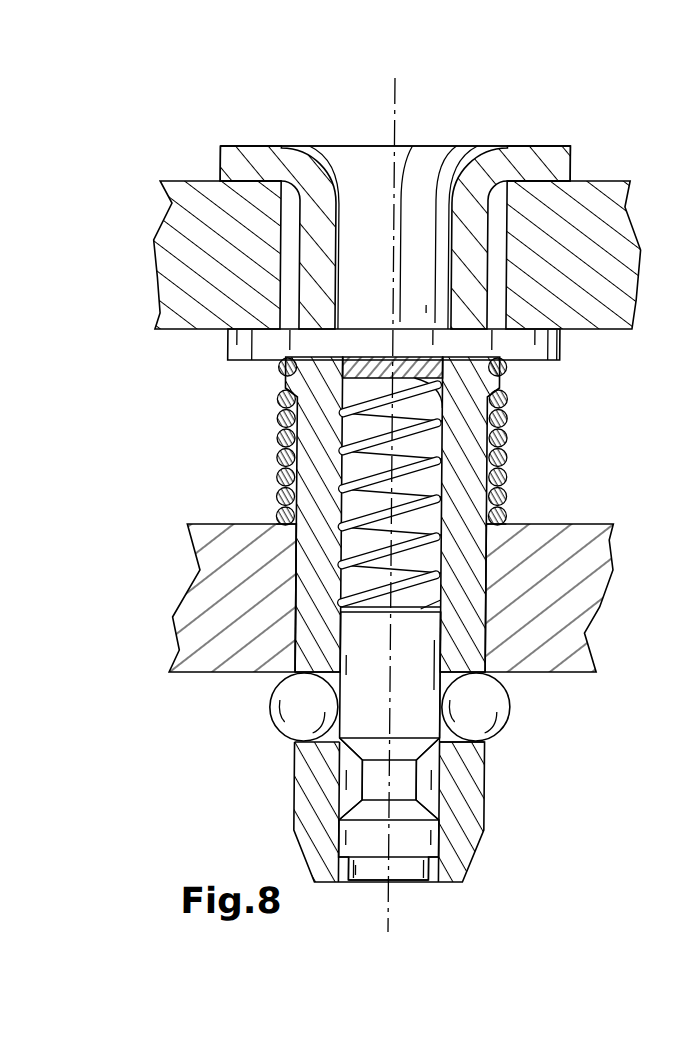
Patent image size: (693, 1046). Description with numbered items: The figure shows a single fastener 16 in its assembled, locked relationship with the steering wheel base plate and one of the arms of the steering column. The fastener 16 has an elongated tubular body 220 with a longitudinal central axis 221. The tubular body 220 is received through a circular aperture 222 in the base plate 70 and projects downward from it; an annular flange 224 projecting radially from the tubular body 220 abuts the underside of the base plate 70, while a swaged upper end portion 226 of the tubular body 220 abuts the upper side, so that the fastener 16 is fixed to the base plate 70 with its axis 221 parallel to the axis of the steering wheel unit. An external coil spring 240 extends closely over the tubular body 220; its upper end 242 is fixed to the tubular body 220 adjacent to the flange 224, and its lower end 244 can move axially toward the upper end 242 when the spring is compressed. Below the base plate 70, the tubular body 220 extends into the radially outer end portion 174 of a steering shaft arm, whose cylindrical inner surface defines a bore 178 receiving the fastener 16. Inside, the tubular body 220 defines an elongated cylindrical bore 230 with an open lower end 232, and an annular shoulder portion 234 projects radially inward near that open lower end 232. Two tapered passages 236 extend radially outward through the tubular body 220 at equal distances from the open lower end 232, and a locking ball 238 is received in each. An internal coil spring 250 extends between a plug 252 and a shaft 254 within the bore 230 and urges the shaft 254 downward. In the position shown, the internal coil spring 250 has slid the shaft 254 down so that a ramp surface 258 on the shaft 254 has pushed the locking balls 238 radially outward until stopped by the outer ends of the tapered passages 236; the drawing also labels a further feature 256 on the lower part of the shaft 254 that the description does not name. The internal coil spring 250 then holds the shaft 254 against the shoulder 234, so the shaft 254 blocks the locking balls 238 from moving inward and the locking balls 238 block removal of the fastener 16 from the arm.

The fastener 16 is at (254, 143).
The circular aperture 222 is at (324, 205).
The longitudinal central axis 221 is at (397, 117).
The swaged upper end portion 226 is at (548, 162).
The base plate 70 is at (159, 230).
The annular flange 224 is at (542, 340).
The upper end of external coil spring 242 is at (291, 373).
The tubular body 220 is at (324, 440).
The external coil spring 240 is at (281, 474).
The lower end of external coil spring 244 is at (290, 517).
The radially outer end portion 174 is at (216, 570).
The bore 178 is at (318, 586).
The plug 252 is at (352, 380).
The internal coil spring 250 is at (449, 481).
The shaft 254 is at (452, 643).
The cylindrical bore 230 is at (422, 670).
The locking balls 238 is at (297, 697).
The tapered passages 236 is at (289, 723).
The ramp surface 258 is at (416, 748).
The tapered surface 256 is at (411, 779).
The annular shoulder portion 234 is at (375, 872).
The open lower end 232 is at (416, 885).